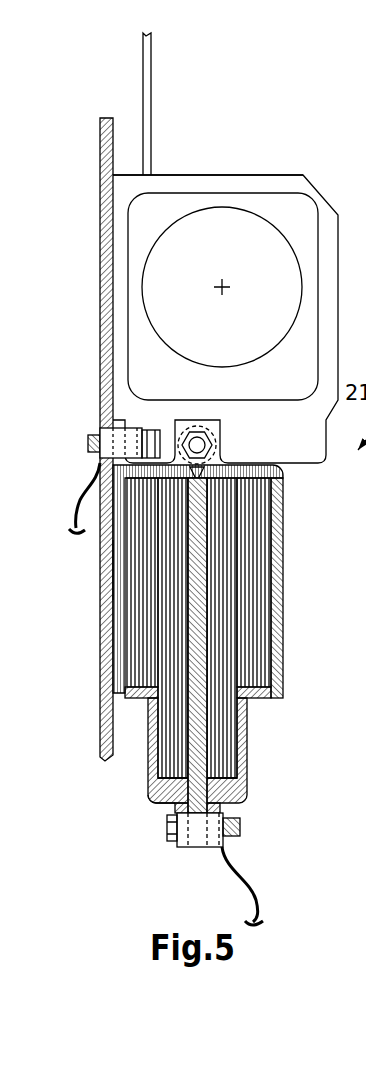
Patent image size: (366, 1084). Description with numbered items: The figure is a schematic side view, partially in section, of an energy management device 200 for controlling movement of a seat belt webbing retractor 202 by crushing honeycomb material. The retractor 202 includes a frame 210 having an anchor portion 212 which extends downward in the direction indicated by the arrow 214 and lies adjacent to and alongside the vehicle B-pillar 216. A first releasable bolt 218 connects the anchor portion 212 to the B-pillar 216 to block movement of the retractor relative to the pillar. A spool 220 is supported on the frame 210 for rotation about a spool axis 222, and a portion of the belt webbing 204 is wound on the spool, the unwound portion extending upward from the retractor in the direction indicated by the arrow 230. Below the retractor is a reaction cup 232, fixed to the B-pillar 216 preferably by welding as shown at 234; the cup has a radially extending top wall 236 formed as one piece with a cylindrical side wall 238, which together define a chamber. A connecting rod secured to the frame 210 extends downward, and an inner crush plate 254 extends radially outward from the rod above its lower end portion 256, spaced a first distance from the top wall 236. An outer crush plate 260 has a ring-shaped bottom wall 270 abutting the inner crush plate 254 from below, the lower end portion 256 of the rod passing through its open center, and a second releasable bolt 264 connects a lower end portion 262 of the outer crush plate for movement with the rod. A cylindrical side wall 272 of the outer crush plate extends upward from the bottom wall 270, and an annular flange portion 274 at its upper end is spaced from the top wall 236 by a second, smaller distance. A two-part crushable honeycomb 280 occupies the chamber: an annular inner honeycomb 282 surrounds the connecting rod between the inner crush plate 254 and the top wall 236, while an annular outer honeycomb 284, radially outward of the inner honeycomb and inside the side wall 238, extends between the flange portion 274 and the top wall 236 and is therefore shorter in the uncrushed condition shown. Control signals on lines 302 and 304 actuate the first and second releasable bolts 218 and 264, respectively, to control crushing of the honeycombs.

The energy management device 200 is at (87, 846).
The seat belt webbing retractor 202 is at (236, 172).
The belt webbing 204 is at (152, 58).
The frame 210 is at (183, 177).
The anchor portion 212 is at (118, 423).
The arrow 214 is at (85, 693).
The vehicle B-pillar 216 is at (100, 155).
The first releasable bolt 218 is at (91, 437).
The spool 220 is at (268, 220).
The spool axis 222 is at (218, 285).
The arrow 230 is at (85, 612).
The reaction cup 232 is at (289, 665).
The welding 234 is at (103, 558).
The top wall 236 is at (243, 465).
The side wall 238 is at (283, 620).
The inner crush plate 254 is at (223, 780).
The lower end portion 256 is at (200, 848).
The outer crush plate 260 is at (250, 792).
The lower end portion 262 is at (223, 811).
The second releasable bolt 264 is at (167, 827).
The bottom wall 270 is at (160, 799).
The side wall 272 is at (248, 723).
The flange portion 274 is at (262, 705).
The two-part crushable honeycomb 280 is at (256, 525).
The inner honeycomb 282 is at (223, 575).
The outer honeycomb 284 is at (253, 588).
The line 302 is at (74, 513).
The line 304 is at (257, 902).